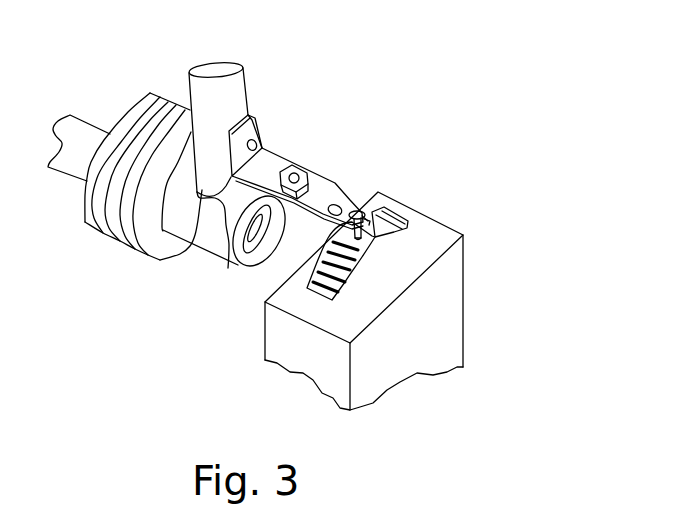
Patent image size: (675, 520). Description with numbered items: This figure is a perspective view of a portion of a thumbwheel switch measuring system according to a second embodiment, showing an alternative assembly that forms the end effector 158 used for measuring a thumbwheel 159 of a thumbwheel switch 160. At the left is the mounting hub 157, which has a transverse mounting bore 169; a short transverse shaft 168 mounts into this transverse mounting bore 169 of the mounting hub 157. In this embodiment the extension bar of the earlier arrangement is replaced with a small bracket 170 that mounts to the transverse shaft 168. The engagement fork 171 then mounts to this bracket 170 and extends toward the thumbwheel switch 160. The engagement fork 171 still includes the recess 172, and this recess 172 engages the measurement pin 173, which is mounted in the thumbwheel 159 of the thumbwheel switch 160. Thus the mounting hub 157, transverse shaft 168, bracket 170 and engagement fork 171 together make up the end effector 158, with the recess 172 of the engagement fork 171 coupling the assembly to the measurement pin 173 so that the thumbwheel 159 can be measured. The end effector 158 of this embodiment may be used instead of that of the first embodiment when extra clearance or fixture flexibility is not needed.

The mounting hub 157 is at (194, 250).
The end effector 158 is at (382, 111).
The thumbwheel 159 is at (375, 243).
The thumbwheel switch 160 is at (463, 273).
The transverse shaft 168 is at (247, 84).
The transverse mounting bore 169 is at (228, 268).
The bracket 170 is at (306, 171).
The engagement fork 171 is at (341, 199).
The recess 172 is at (363, 218).
The measurement pin 173 is at (375, 210).